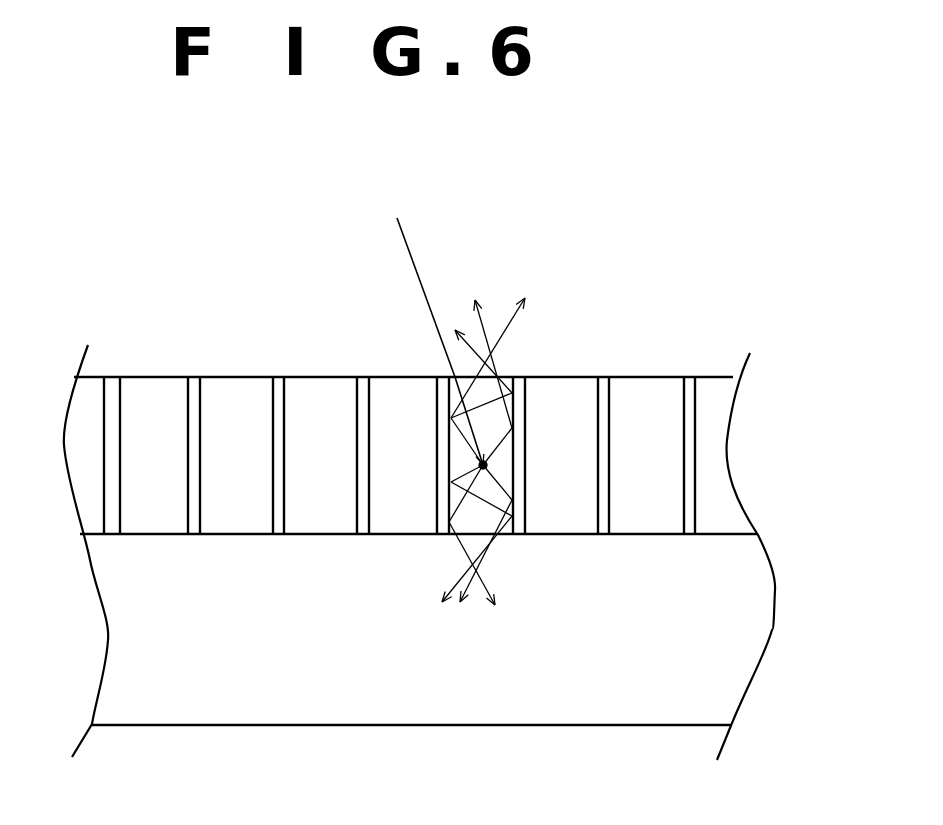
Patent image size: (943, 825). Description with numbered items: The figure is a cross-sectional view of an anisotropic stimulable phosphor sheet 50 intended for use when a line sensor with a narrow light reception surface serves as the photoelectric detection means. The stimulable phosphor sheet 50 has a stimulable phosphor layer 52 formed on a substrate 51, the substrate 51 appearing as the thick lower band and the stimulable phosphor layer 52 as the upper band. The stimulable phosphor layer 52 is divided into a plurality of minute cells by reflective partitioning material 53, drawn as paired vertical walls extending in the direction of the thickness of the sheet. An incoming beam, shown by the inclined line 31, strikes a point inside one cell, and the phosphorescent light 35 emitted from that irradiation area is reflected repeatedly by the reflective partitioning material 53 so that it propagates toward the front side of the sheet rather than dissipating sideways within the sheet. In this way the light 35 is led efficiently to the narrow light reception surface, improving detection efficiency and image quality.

The incident light beam 31 is at (417, 275).
The phosphorescent light 35 is at (502, 335).
The stimulable phosphor sheet 50 is at (668, 229).
The substrate 51 is at (732, 645).
The stimulable phosphor layer 52 is at (718, 495).
The reflective partitioning material 53 is at (687, 432).